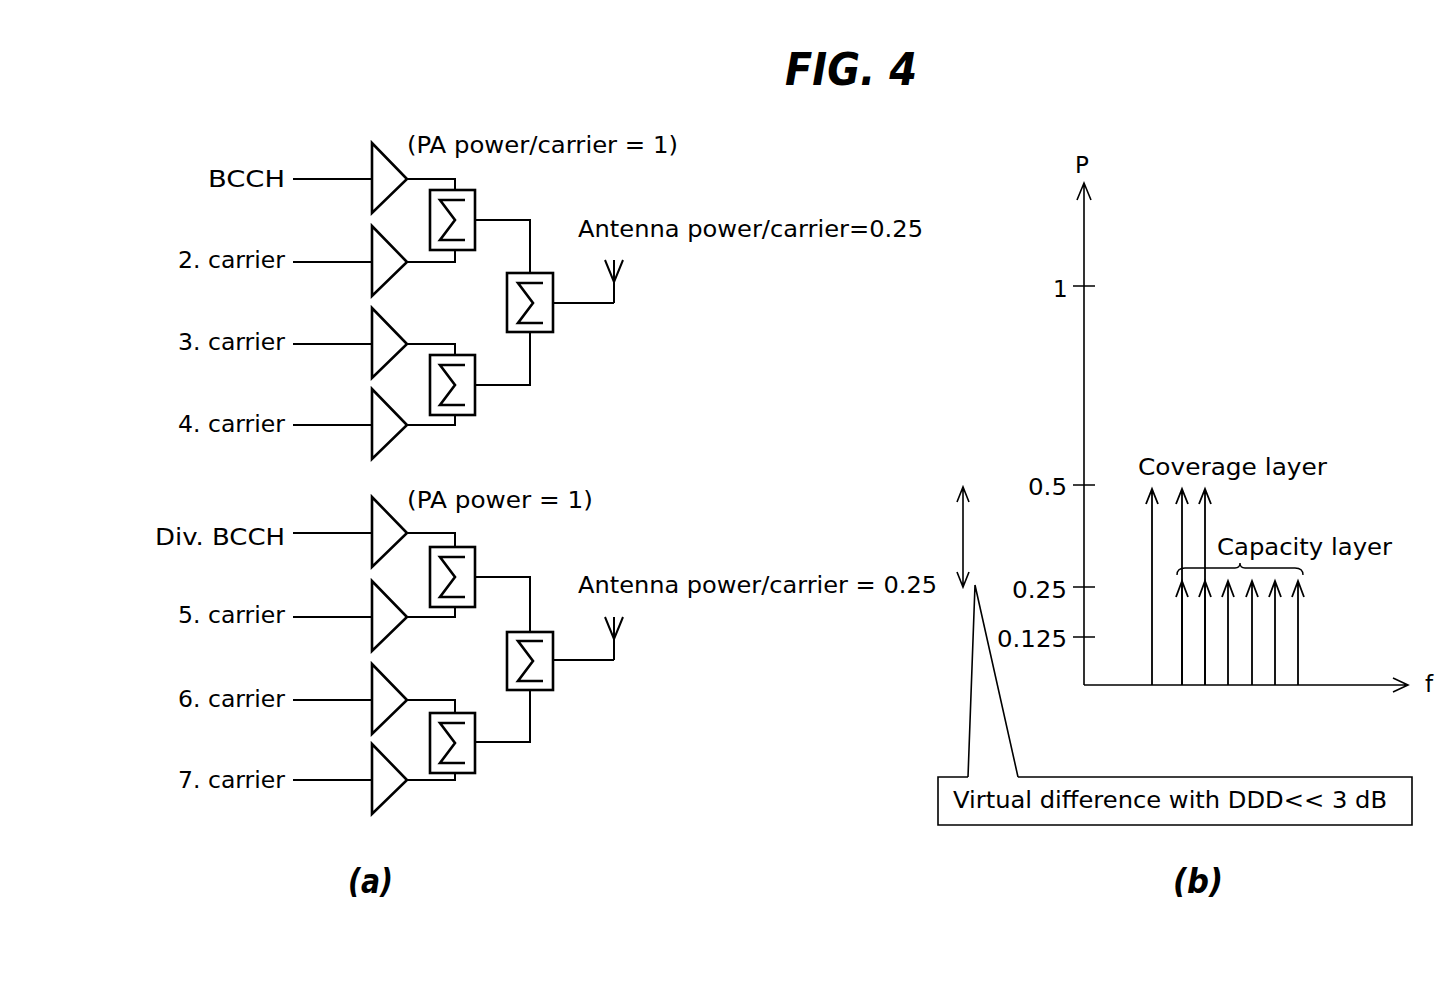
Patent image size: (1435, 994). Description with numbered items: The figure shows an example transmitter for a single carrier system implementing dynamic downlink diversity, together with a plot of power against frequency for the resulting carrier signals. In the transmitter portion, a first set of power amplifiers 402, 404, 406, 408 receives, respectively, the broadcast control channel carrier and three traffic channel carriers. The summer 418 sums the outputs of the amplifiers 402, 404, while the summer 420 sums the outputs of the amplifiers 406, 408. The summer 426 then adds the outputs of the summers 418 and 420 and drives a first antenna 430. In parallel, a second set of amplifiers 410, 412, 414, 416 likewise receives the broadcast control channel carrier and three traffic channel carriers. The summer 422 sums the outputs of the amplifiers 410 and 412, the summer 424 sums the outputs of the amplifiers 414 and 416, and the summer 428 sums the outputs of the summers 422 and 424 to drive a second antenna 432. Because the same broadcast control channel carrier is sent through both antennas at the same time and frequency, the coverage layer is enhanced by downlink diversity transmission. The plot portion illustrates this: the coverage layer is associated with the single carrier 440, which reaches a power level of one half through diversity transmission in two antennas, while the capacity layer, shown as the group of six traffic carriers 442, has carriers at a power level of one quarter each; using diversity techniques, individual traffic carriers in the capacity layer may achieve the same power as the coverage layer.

The power amplifier 402 is at (372, 150).
The power amplifier 404 is at (372, 235).
The power amplifier 406 is at (372, 314).
The power amplifier 408 is at (372, 400).
The power amplifier 410 is at (372, 504).
The power amplifier 412 is at (372, 595).
The power amplifier 414 is at (372, 667).
The power amplifier 416 is at (372, 760).
The summer 418 is at (475, 198).
The summer 420 is at (475, 397).
The summer 422 is at (475, 553).
The summer 424 is at (475, 755).
The summer 426 is at (553, 313).
The summer 428 is at (553, 668).
The first antenna 430 is at (623, 270).
The second antenna 432 is at (623, 627).
The single carrier 440 is at (1152, 520).
The capacity layer 442 is at (1303, 697).